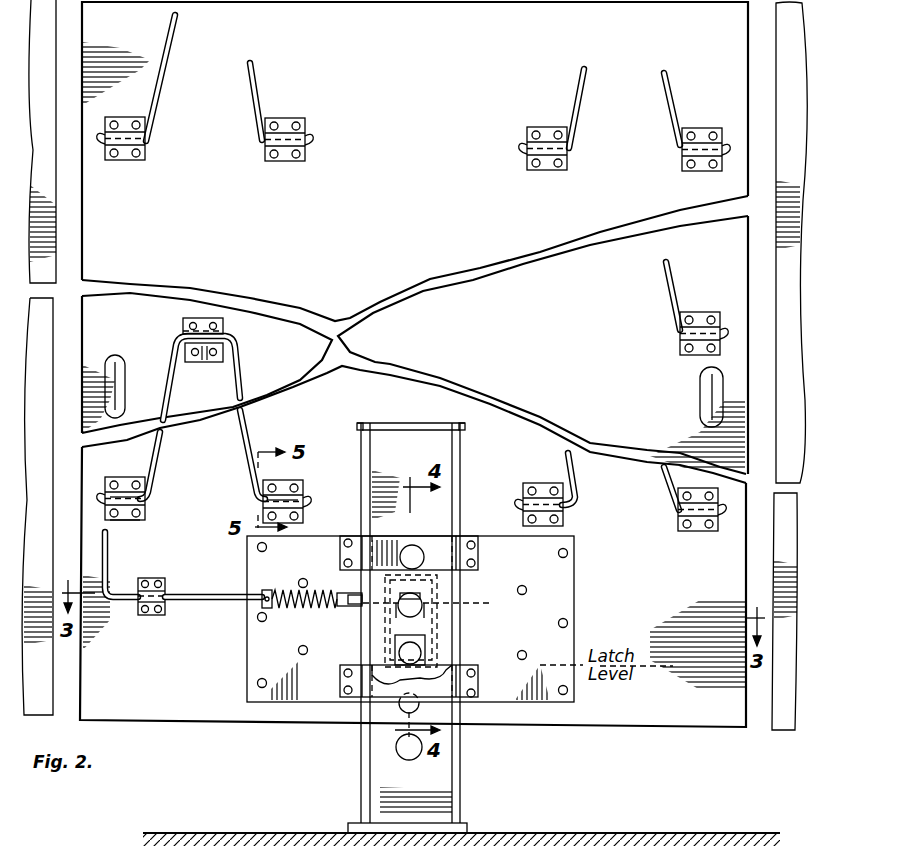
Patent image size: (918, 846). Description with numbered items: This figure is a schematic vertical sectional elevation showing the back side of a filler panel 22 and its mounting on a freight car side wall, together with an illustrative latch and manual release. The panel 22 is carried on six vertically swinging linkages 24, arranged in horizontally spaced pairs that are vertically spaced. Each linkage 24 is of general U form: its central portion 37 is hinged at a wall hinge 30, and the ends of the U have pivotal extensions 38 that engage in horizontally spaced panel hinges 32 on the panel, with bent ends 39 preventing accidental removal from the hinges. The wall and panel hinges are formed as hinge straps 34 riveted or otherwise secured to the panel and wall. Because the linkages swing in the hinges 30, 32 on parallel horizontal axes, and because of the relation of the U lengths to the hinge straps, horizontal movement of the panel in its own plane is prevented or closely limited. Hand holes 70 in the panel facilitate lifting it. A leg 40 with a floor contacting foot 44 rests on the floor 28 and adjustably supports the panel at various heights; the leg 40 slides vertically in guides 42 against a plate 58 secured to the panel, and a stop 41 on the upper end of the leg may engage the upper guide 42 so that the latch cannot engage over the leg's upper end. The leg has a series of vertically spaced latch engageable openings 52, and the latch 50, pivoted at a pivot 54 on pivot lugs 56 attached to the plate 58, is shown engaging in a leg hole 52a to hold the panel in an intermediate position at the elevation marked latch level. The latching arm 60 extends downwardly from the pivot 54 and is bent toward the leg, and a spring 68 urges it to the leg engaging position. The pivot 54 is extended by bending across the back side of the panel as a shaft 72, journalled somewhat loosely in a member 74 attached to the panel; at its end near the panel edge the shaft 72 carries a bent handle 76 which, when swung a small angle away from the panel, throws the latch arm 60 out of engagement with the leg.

The panel 22 is at (395, 216).
The vertically swinging linkages 24 is at (165, 93).
The floor 28 is at (604, 828).
The wall hinges 30 is at (225, 328).
The panel hinges 32 is at (547, 125).
The hinge straps 34 is at (127, 515).
The central portion 37 is at (183, 337).
The pivotal extensions 38 is at (146, 505).
The bent ends 39 is at (102, 498).
The leg 40 is at (462, 790).
The stop 41 is at (466, 428).
The guides 42 is at (453, 583).
The floor contacting foot 44 is at (466, 830).
The latch 50 is at (398, 626).
The latch engageable openings 52 is at (412, 546).
The leg hole 52a is at (395, 648).
The latch pivot 54 is at (437, 605).
The pivot lugs 56 is at (394, 610).
The plate 58 is at (567, 601).
The latching arm 60 is at (437, 620).
The spring 68 is at (300, 608).
The hand holes 70 is at (120, 392).
The shaft 72 is at (212, 600).
The member 74 is at (152, 617).
The bent handle 76 is at (109, 565).